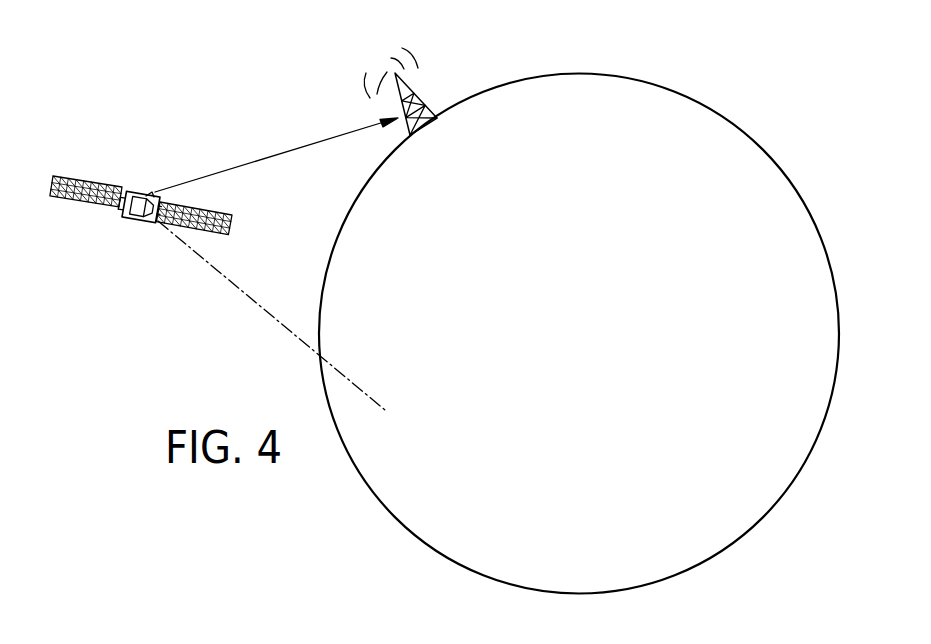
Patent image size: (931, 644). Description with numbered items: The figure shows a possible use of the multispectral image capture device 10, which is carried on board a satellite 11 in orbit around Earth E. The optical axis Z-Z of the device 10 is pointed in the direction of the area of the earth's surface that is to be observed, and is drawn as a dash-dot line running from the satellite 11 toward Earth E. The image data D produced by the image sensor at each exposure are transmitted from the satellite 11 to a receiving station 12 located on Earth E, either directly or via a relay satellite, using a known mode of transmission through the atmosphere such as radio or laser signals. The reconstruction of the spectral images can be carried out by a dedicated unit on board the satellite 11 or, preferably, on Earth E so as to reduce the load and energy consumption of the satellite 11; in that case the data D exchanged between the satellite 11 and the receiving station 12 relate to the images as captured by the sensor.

The multispectral image capture device 10 is at (148, 220).
The satellite 11 is at (150, 194).
The receiving station 12 is at (423, 98).
The image data D is at (292, 148).
The Earth E is at (770, 150).
The optical axis Z is at (202, 265).